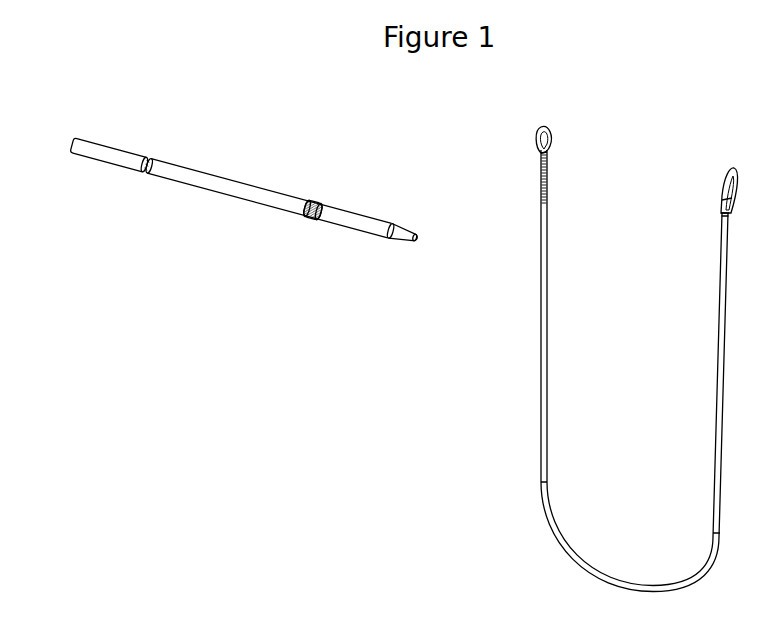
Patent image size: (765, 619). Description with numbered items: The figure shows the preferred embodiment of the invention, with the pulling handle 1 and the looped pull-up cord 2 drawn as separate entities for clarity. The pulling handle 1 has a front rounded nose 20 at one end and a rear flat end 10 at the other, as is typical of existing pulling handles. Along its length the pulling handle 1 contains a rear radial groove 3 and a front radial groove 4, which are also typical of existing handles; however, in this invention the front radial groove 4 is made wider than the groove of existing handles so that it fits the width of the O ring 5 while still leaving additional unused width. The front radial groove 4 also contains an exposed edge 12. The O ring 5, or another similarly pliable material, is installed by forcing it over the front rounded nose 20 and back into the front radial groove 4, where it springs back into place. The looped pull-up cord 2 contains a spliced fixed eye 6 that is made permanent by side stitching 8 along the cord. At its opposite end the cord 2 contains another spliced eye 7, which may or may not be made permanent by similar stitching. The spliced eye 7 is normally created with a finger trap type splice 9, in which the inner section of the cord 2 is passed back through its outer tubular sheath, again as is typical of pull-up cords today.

The pulling handle 1 is at (243, 178).
The rear flat end 10 is at (70, 142).
The rear radial groove 3 is at (144, 173).
The front radial groove 4 is at (322, 206).
The O ring 5 is at (307, 217).
The exposed edge 12 is at (315, 220).
The front rounded nose 20 is at (408, 227).
The looped pull-up cord 2 is at (715, 418).
The spliced fixed eye 6 is at (552, 135).
The spliced eye 7 is at (732, 172).
The side stitching 8 is at (547, 177).
The finger trap type splice 9 is at (723, 212).